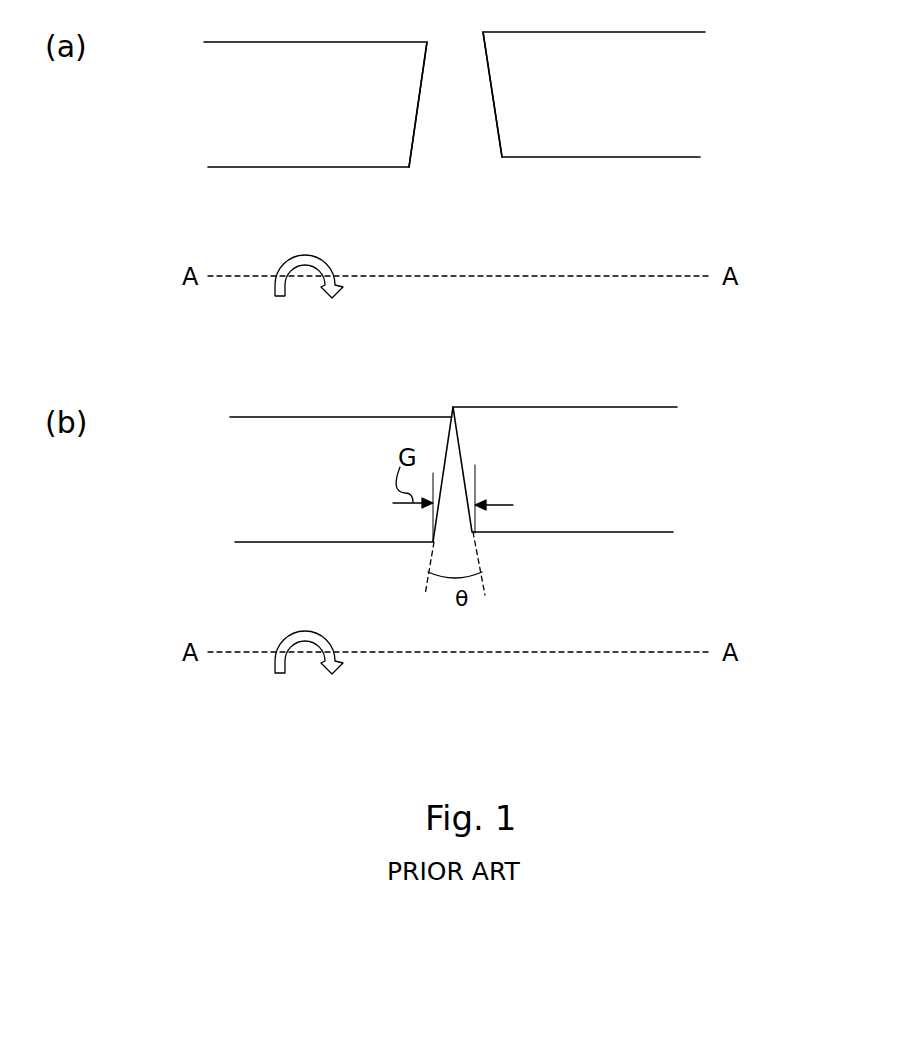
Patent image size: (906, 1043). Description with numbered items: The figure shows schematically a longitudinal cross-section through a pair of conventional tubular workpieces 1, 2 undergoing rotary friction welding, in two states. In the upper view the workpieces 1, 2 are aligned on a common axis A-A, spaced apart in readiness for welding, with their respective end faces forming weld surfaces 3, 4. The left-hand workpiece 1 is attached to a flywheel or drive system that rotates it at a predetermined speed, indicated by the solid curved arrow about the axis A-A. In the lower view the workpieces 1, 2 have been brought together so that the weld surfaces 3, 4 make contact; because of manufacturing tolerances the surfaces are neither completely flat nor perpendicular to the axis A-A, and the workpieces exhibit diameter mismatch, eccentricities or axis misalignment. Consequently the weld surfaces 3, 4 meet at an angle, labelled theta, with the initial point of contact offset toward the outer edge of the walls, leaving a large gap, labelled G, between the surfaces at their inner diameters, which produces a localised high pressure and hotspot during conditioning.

The tubular workpiece 1 is at (300, 118).
The tubular workpiece 2 is at (602, 106).
The weld surface 3 is at (417, 117).
The weld surface 4 is at (487, 62).